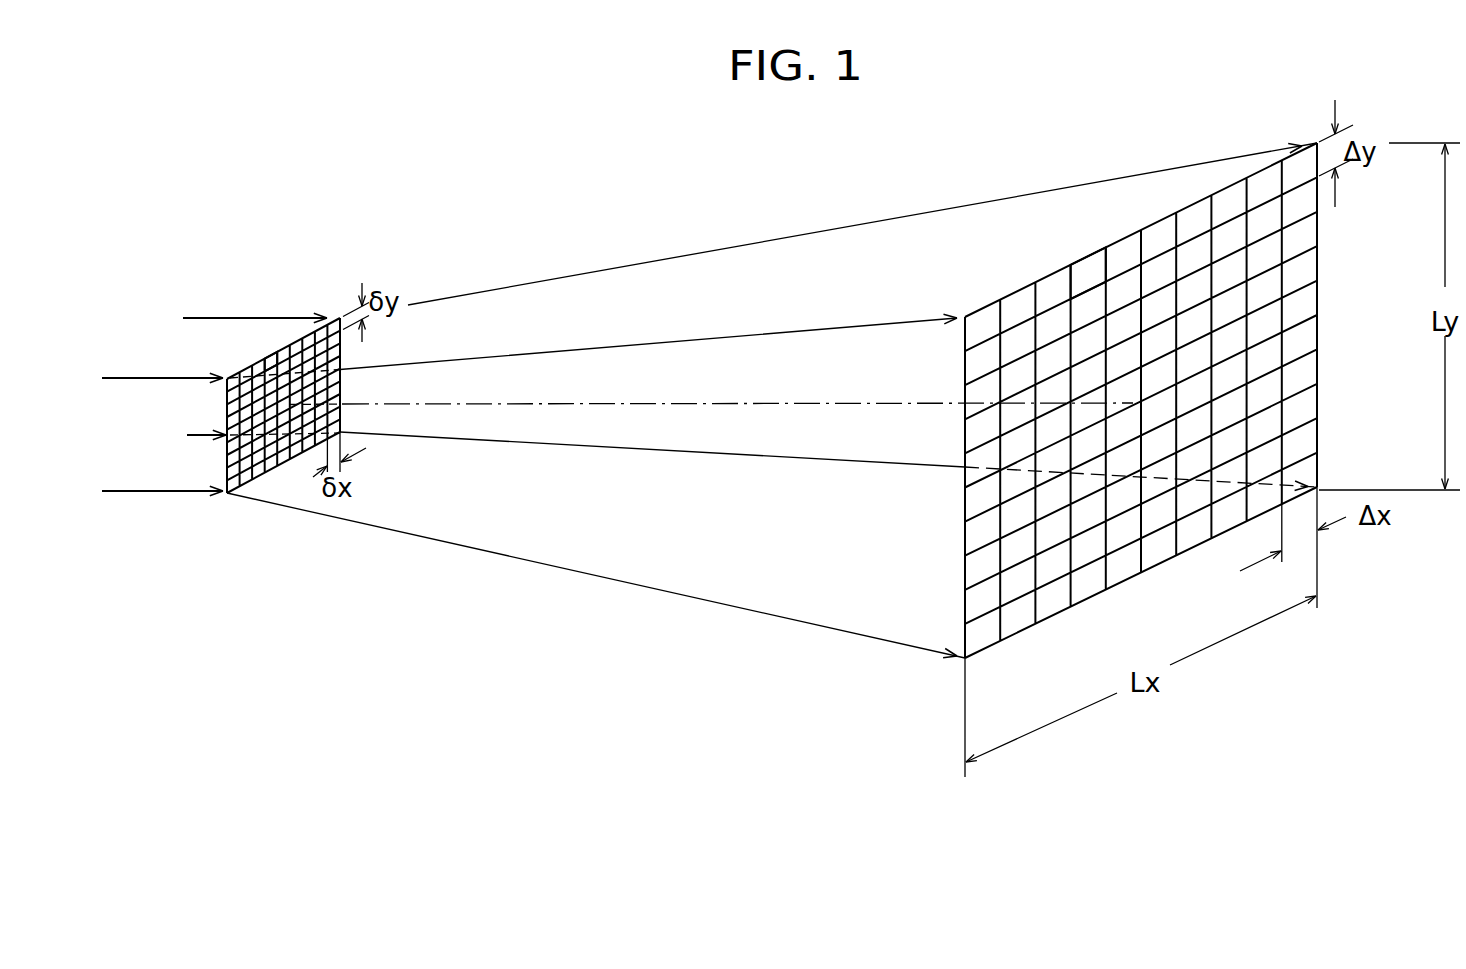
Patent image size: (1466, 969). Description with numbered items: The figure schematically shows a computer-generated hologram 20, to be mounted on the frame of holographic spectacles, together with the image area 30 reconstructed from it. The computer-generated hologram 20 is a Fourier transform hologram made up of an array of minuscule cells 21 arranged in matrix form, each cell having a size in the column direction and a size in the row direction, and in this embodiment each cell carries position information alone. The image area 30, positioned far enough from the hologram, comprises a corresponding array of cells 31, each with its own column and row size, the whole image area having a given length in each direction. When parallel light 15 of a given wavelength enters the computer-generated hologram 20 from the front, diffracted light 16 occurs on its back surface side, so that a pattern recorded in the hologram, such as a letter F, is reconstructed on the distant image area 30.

The parallel light 15 is at (148, 493).
The diffracted light 16 is at (556, 567).
The computer-generated hologram 20 is at (197, 460).
The cell 21 is at (268, 362).
The image area 30 is at (928, 577).
The cell 31 is at (1089, 272).